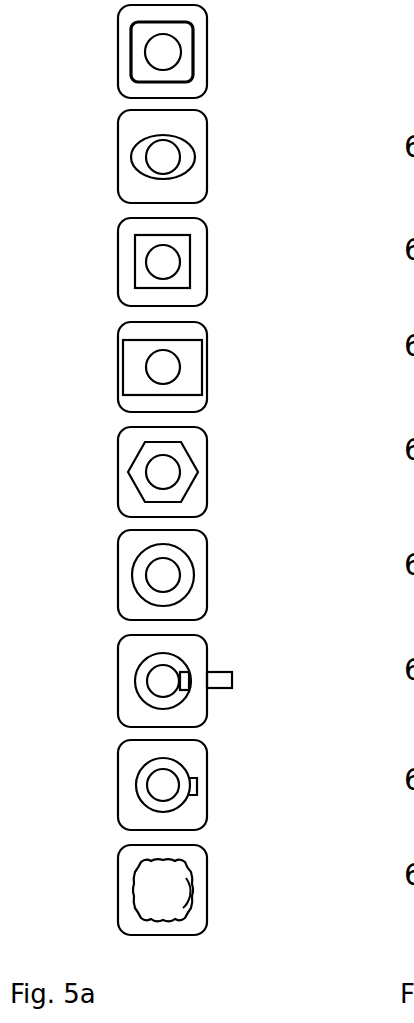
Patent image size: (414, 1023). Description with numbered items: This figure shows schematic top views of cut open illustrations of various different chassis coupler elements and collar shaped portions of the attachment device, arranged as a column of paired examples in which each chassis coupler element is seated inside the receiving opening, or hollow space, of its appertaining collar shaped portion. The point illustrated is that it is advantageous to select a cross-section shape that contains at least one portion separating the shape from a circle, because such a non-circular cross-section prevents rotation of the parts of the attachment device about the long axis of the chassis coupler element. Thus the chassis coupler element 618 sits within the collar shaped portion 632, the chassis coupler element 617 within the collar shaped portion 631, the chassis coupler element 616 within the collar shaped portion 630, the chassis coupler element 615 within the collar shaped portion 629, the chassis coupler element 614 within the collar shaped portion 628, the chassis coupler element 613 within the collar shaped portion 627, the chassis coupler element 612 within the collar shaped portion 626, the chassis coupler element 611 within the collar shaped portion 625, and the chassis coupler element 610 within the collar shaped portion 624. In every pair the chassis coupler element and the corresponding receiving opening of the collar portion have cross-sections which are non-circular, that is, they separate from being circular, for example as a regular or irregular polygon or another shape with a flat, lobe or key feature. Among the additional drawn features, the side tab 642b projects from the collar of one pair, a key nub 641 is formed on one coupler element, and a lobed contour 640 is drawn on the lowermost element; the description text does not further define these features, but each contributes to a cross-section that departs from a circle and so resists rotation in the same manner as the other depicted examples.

The collar shaped portion 632 is at (128, 31).
The chassis coupler element 618 is at (181, 50).
The collar shaped portion 631 is at (130, 128).
The chassis coupler element 617 is at (186, 158).
The collar shaped portion 630 is at (128, 236).
The chassis coupler element 616 is at (181, 278).
The collar shaped portion 629 is at (128, 402).
The chassis coupler element 615 is at (194, 388).
The collar shaped portion 628 is at (129, 502).
The chassis coupler element 614 is at (186, 484).
The collar shaped portion 627 is at (128, 606).
The chassis coupler element 613 is at (181, 592).
The collar shaped portion 626 is at (133, 712).
The chassis coupler element 612 is at (175, 698).
The side tab 642b is at (232, 680).
The collar shaped portion 625 is at (135, 816).
The chassis coupler element 611 is at (175, 778).
The key nub 641 is at (192, 787).
The collar shaped portion 624 is at (134, 918).
The chassis coupler element 610 is at (165, 882).
The knurl lobes 640 is at (190, 898).